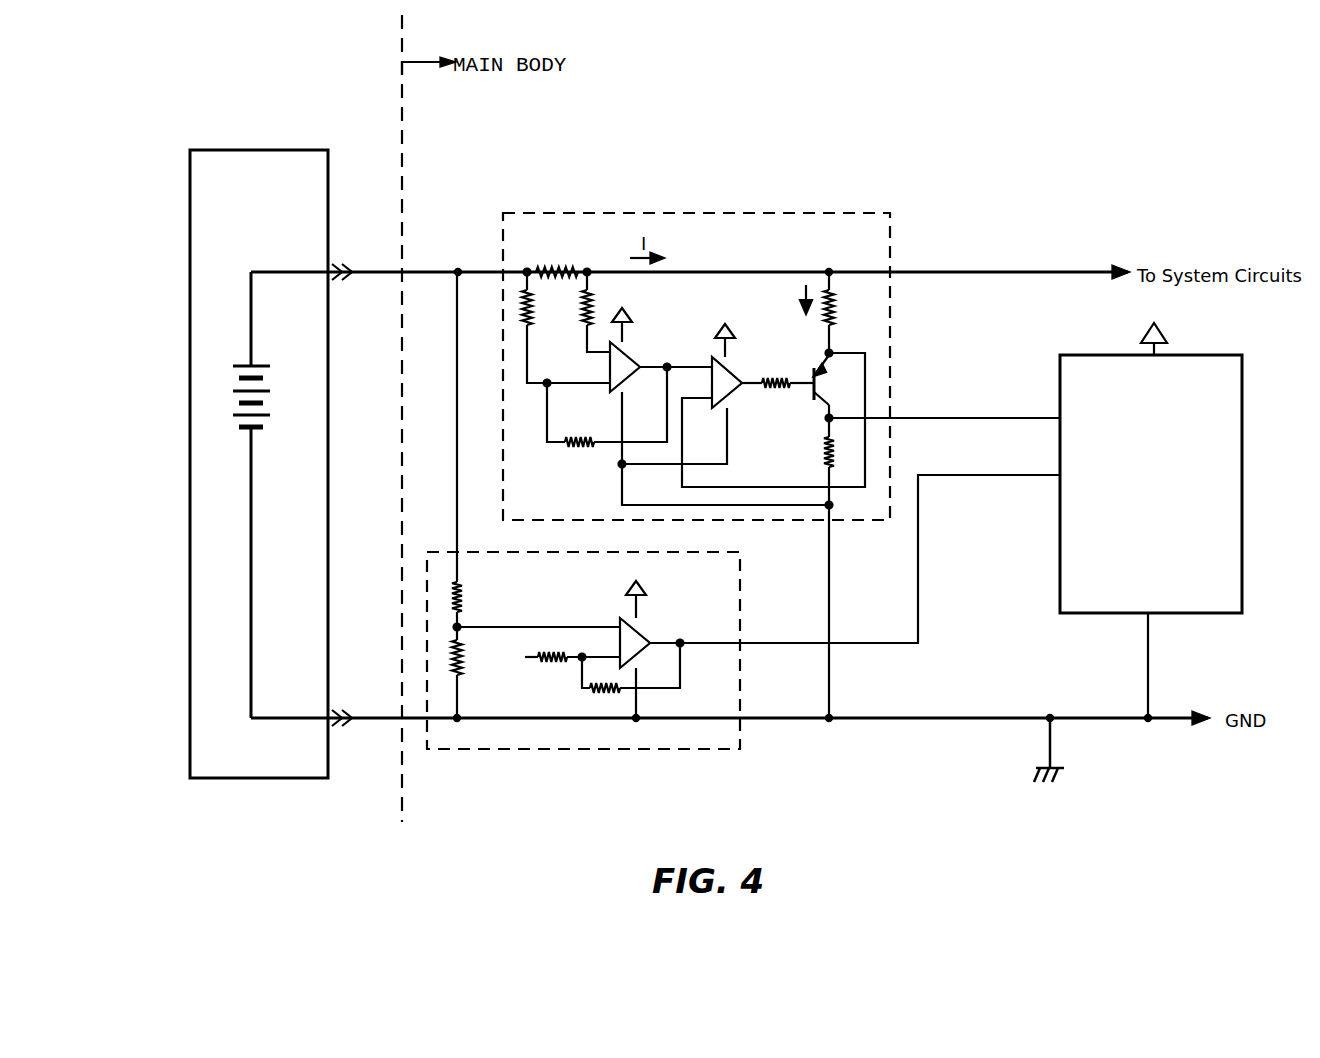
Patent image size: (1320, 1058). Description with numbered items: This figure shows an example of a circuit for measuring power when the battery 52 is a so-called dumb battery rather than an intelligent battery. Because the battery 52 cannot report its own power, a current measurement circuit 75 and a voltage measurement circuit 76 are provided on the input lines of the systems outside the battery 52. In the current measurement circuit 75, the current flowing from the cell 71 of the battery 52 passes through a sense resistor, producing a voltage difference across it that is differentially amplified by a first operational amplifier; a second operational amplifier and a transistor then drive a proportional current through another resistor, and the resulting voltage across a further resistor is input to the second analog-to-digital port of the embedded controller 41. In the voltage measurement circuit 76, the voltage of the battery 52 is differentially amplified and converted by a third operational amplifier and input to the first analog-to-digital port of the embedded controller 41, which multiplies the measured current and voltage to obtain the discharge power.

The battery 52 is at (330, 212).
The cell 71 is at (278, 422).
The current measurement circuit 75 is at (774, 210).
The voltage measurement circuit 76 is at (742, 726).
The embedded controller 41 is at (1243, 482).